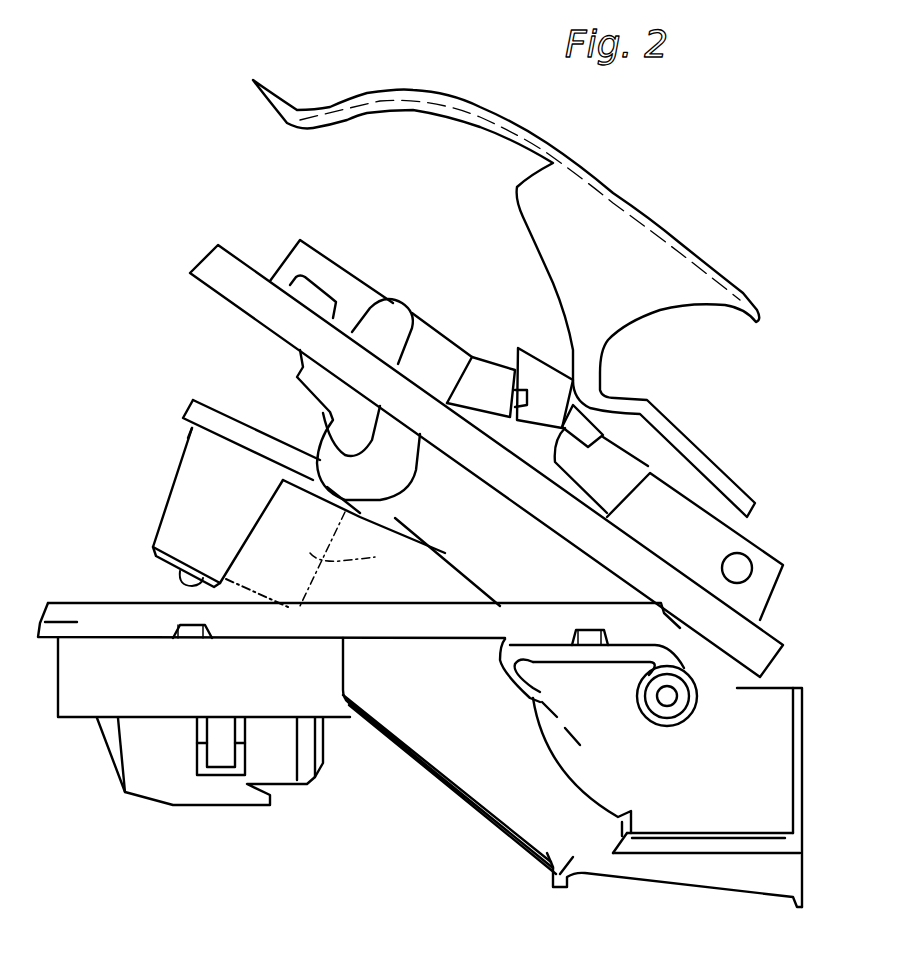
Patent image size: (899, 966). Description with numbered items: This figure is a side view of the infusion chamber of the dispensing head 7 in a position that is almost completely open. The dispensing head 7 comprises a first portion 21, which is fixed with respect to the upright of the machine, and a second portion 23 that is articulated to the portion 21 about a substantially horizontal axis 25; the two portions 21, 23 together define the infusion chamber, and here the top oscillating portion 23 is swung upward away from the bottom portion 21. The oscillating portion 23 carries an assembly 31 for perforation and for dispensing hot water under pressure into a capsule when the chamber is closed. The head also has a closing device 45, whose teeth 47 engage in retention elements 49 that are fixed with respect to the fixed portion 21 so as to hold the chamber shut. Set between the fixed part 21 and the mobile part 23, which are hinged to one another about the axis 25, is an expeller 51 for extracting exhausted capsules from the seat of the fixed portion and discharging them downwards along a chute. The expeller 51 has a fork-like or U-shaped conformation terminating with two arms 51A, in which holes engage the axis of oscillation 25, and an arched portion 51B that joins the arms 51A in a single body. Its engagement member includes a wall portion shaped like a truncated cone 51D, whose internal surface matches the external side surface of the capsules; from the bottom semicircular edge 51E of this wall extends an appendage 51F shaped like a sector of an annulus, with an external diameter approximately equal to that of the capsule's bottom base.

The dispensing head 7 is at (200, 110).
The second portion 23 is at (216, 264).
The perforation and dispensing assembly 31 is at (358, 283).
The closing device 45 is at (553, 301).
The teeth 47 is at (380, 453).
The expeller 51 is at (163, 493).
The arms 51A is at (500, 585).
The arched portion 51B is at (215, 412).
The truncated-cone wall portion 51D is at (190, 455).
The bottom semicircular edge 51E is at (150, 545).
The appendage 51F is at (207, 575).
The first portion 21 is at (55, 590).
The retention elements 49 is at (185, 623).
The axis of oscillation 25 is at (667, 695).